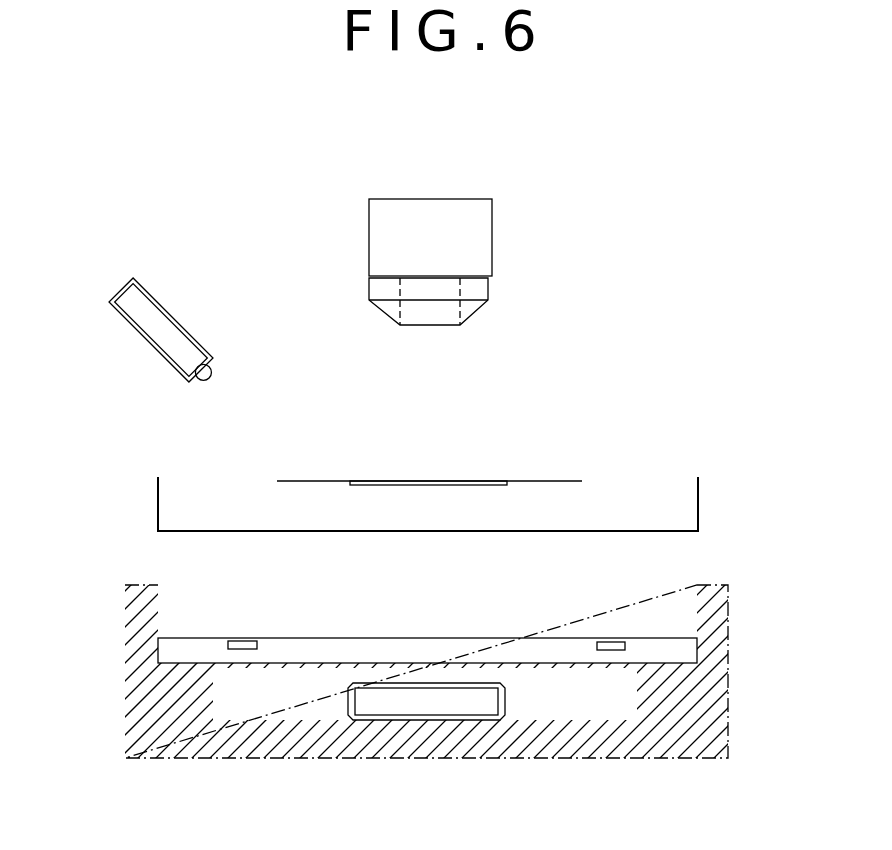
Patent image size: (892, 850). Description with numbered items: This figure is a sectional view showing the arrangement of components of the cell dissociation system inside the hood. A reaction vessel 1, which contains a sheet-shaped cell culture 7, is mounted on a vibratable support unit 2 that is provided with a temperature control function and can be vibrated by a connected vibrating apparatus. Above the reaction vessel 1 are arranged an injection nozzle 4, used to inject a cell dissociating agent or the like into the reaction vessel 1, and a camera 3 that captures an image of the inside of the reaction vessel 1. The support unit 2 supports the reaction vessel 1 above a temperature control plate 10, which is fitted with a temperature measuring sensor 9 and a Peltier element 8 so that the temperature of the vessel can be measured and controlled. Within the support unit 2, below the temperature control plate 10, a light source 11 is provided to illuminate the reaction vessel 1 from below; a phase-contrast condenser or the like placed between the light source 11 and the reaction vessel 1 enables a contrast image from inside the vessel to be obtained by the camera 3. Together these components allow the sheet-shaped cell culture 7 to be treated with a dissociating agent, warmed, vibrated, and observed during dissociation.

The reaction vessel 1 is at (698, 503).
The vibratable support unit 2 is at (693, 715).
The camera 3 is at (492, 230).
The injection nozzle 4 is at (163, 299).
The sheet-shaped cell culture 7 is at (429, 464).
The Peltier element 8 is at (613, 640).
The temperature measuring sensor 9 is at (237, 641).
The temperature control plate 10 is at (687, 655).
The light source 11 is at (405, 701).